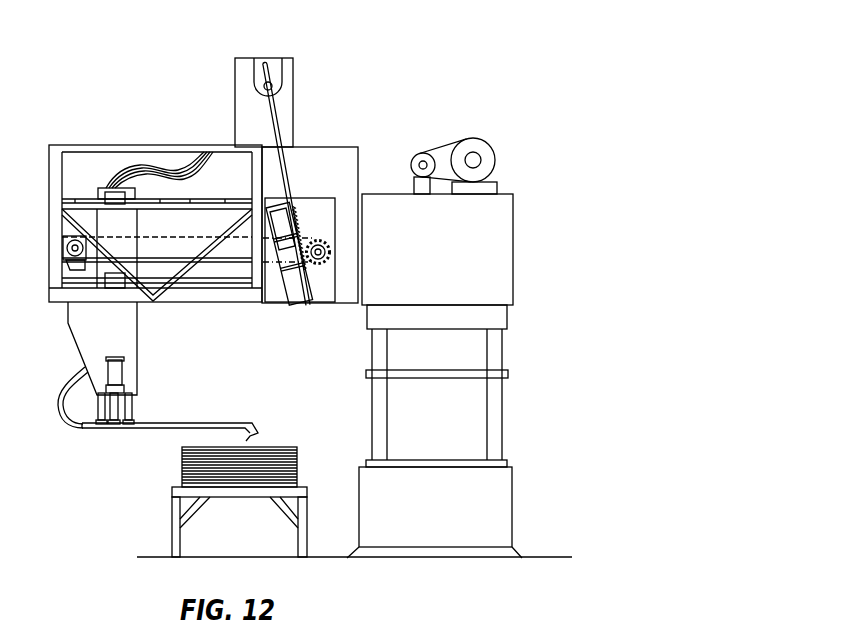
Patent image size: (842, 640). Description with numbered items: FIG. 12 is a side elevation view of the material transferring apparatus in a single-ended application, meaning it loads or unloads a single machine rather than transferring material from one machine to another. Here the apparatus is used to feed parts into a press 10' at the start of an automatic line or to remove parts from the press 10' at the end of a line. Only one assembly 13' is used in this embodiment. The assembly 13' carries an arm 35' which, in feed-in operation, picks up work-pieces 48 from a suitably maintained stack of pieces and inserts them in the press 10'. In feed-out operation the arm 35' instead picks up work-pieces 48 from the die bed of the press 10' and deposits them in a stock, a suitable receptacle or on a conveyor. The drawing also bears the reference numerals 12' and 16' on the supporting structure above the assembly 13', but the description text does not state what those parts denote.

The conveyor frame 12' is at (203, 207).
The truss conveyor 16' is at (157, 255).
The assembly 13' is at (121, 365).
The arm 35' is at (170, 418).
The work-pieces 48 is at (182, 464).
The press 10' is at (449, 348).